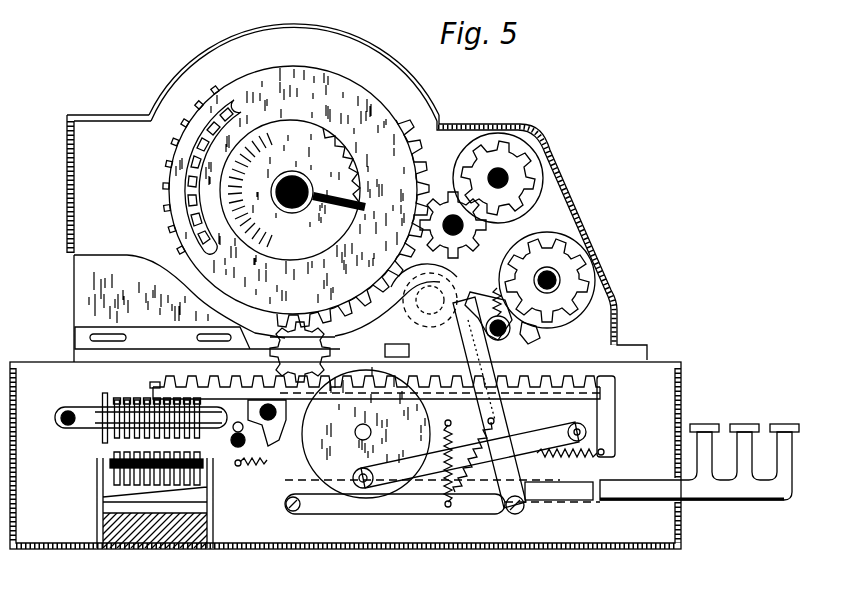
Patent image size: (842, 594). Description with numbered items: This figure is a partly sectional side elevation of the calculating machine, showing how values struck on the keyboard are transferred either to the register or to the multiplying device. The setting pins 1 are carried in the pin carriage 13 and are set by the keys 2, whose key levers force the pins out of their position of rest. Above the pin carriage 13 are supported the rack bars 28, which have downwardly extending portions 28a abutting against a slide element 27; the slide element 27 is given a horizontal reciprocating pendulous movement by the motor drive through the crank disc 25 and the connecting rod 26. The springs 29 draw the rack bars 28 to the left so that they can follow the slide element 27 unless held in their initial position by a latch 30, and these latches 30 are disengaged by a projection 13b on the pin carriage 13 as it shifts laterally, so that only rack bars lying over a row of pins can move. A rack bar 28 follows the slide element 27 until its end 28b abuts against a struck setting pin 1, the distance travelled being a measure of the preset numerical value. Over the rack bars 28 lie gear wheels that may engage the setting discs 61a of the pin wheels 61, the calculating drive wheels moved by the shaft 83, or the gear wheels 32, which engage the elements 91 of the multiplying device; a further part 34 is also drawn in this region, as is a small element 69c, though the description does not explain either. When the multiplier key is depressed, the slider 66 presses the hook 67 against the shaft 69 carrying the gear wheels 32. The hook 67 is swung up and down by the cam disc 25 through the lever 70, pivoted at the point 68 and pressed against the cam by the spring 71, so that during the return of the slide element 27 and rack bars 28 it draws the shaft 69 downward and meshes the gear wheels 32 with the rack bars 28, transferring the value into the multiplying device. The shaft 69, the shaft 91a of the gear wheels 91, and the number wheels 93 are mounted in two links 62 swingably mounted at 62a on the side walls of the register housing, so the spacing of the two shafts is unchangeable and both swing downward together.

The setting pins 1 is at (102, 396).
The keys 2 is at (706, 424).
The pin carriage 13 is at (80, 427).
The projection 13b is at (257, 432).
The crank disc 25 is at (352, 465).
The connecting rod 26 is at (502, 452).
The slide element 27 is at (590, 431).
The rack bars 28 is at (538, 394).
The downwardly extending portions 28a is at (608, 406).
The end of rack bar 28b is at (152, 388).
The springs 29 is at (560, 456).
The latch 30 is at (258, 444).
The gear wheels 32 is at (530, 336).
The stop block 34 is at (390, 351).
The pin wheels 61 is at (283, 140).
The setting discs 61a is at (176, 192).
The links 62 is at (585, 315).
The swing mounting 62a is at (420, 372).
The slider 66 is at (140, 331).
The hook 67 is at (485, 406).
The pivot point 68 is at (293, 510).
The shaft 69 is at (486, 296).
The pinion 69c is at (498, 316).
The lever 70 is at (388, 508).
The spring 71 is at (443, 436).
The shaft 83 is at (305, 186).
The gear wheels 91 is at (566, 264).
The shaft 91a is at (552, 281).
The number wheels 93 is at (543, 242).